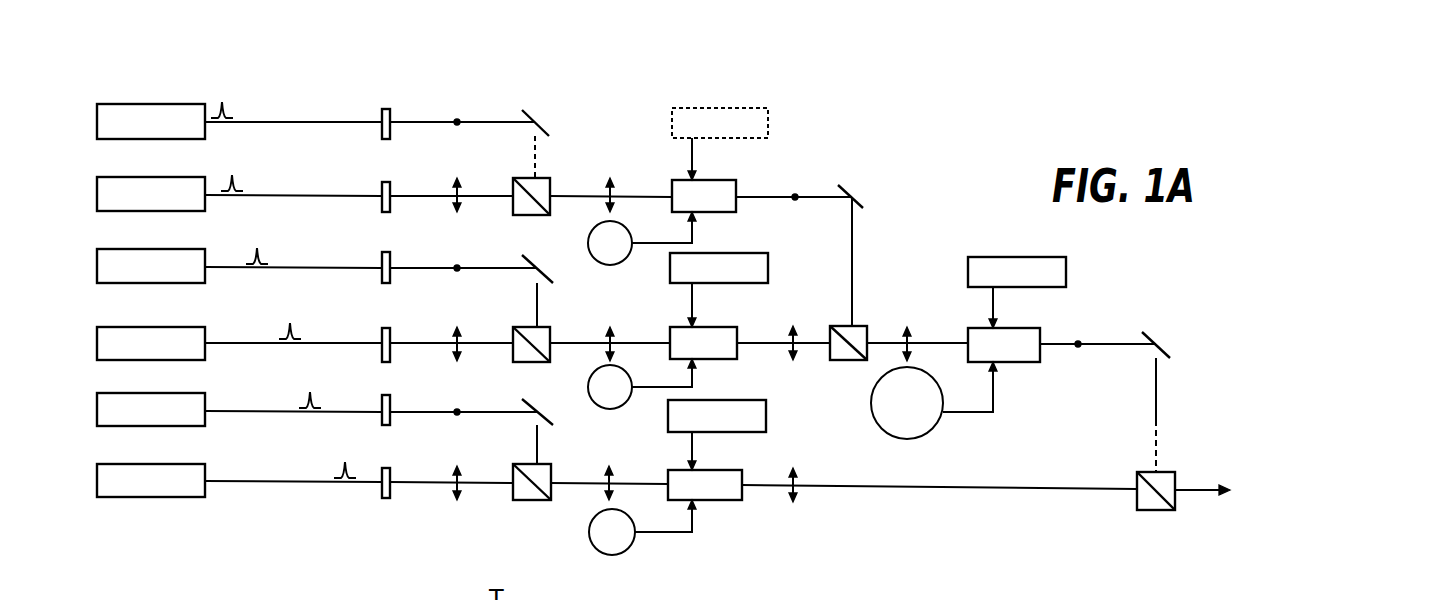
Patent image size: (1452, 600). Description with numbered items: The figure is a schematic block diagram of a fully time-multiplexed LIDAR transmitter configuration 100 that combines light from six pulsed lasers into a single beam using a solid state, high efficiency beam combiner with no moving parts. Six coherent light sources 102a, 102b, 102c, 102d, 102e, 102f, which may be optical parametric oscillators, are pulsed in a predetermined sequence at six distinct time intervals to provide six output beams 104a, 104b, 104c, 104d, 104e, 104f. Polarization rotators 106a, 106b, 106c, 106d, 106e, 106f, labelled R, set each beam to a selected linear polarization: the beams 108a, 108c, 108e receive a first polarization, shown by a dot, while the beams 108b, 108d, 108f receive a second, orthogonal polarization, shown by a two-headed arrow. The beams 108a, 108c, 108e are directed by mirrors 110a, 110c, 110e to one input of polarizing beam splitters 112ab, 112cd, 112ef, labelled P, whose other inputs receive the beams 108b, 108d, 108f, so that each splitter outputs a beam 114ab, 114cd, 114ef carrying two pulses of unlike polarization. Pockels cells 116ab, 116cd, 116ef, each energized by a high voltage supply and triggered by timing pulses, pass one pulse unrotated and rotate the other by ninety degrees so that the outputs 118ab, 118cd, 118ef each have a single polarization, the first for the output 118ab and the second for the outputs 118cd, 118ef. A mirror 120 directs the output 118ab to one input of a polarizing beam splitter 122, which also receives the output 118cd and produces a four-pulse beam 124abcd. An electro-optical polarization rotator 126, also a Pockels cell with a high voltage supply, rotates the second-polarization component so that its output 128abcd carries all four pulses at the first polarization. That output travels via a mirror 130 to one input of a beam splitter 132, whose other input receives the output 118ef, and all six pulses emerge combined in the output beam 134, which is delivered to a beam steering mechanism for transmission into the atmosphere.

The fully time-multiplexed transmitter configuration 100 is at (895, 152).
The coherent light source 102a is at (122, 105).
The coherent light source 102b is at (122, 178).
The coherent light source 102c is at (122, 250).
The coherent light source 102d is at (122, 328).
The coherent light source 102e is at (122, 394).
The coherent light source 102f is at (122, 465).
The output beam 104a is at (347, 121).
The output beam 104b is at (354, 195).
The output beam 104c is at (363, 267).
The output beam 104d is at (248, 342).
The output beam 104e is at (252, 410).
The output beam 104f is at (258, 481).
The polarization rotator 106a is at (396, 112).
The polarization rotator 106b is at (396, 185).
The polarization rotator 106c is at (396, 258).
The polarization rotator 106d is at (396, 332).
The polarization rotator 106e is at (396, 398).
The polarization rotator 106f is at (396, 470).
The polarized beam 108a is at (445, 112).
The polarized beam 108b is at (449, 181).
The polarized beam 108c is at (447, 256).
The polarized beam 108d is at (449, 329).
The polarized beam 108e is at (447, 398).
The polarized beam 108f is at (449, 467).
The mirror 110a is at (542, 114).
The mirror 110c is at (553, 276).
The mirror 110e is at (553, 418).
The polarizing beam splitter 112ab is at (550, 177).
The polarizing beam splitter 112cd is at (549, 326).
The polarizing beam splitter 112ef is at (548, 463).
The beam 114ab is at (600, 179).
The beam 114cd is at (601, 331).
The beam 114ef is at (598, 471).
The Pockels cell 116ab is at (716, 180).
The Pockels cell 116cd is at (718, 327).
The Pockels cell 116ef is at (714, 470).
The output of the Pockels cell 118ab is at (769, 196).
The output of the Pockels cell 118cd is at (756, 336).
The output of the Pockels cell 118ef is at (758, 486).
The mirror 120 is at (865, 198).
The polarizing beam splitter 122 is at (856, 322).
The output of the beam splitter 124abcd is at (871, 340).
The electro-optical polarization rotator 126 is at (1001, 328).
The output of the Pockels cell 128abcd is at (1050, 343).
The mirror 130 is at (1166, 334).
The beam splitter 132 is at (1178, 471).
The output beam 134 is at (1210, 482).